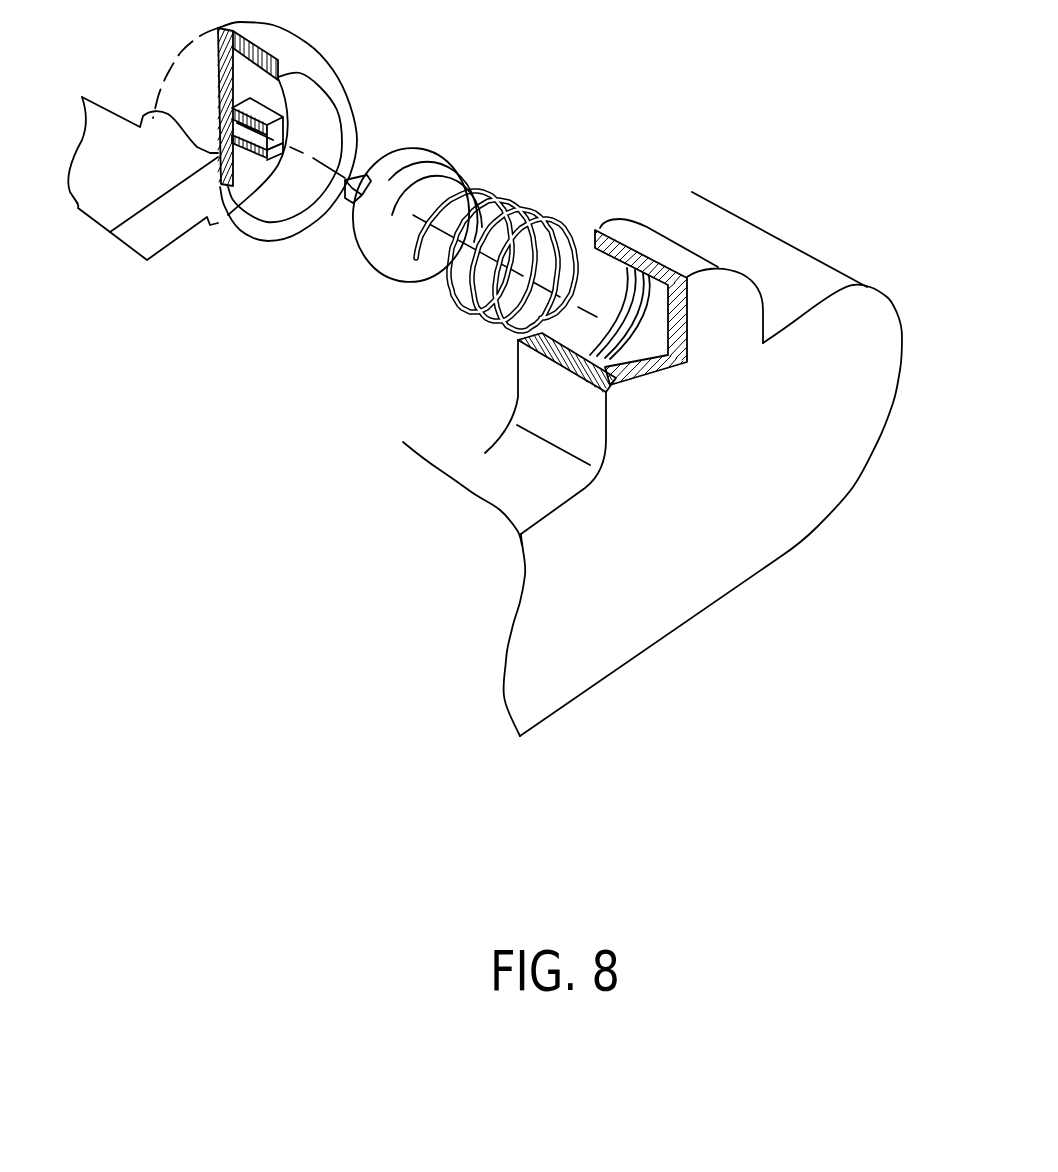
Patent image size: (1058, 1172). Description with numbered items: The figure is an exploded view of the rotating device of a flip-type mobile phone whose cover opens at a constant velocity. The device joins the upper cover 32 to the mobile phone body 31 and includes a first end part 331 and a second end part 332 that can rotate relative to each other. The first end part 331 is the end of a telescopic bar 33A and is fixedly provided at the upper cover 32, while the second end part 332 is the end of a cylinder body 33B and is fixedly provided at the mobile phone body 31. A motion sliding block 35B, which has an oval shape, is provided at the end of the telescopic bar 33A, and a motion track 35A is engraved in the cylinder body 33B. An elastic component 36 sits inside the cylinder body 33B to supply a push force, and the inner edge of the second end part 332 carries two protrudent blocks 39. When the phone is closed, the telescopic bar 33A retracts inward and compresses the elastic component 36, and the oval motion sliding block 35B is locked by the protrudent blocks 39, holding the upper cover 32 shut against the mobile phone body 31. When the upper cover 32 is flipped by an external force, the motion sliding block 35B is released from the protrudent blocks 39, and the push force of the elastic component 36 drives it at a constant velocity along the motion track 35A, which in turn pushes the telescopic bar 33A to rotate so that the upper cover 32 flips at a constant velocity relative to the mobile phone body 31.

The mobile phone body 31 is at (668, 619).
The upper cover 32 is at (102, 183).
The telescopic bar 33A is at (348, 204).
The cylinder body 33B is at (653, 241).
The first end part 331 is at (360, 164).
The second end part 332 is at (726, 317).
The motion track 35A is at (660, 362).
The motion sliding block 35B is at (388, 262).
The elastic component 36 is at (462, 307).
The protrudent blocks 39 is at (560, 357).